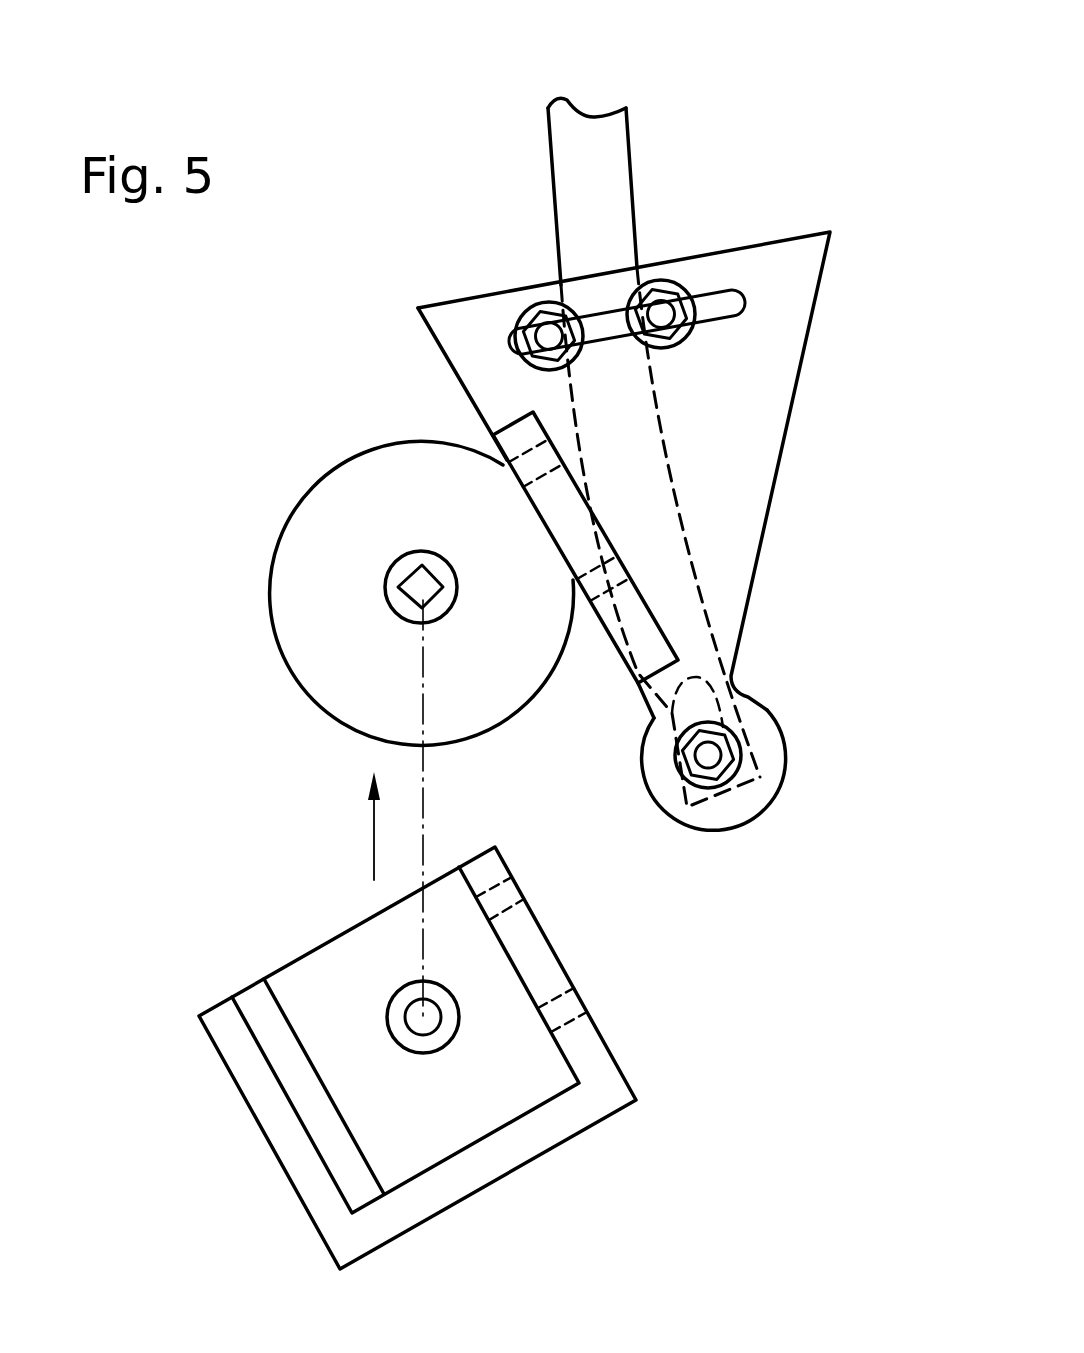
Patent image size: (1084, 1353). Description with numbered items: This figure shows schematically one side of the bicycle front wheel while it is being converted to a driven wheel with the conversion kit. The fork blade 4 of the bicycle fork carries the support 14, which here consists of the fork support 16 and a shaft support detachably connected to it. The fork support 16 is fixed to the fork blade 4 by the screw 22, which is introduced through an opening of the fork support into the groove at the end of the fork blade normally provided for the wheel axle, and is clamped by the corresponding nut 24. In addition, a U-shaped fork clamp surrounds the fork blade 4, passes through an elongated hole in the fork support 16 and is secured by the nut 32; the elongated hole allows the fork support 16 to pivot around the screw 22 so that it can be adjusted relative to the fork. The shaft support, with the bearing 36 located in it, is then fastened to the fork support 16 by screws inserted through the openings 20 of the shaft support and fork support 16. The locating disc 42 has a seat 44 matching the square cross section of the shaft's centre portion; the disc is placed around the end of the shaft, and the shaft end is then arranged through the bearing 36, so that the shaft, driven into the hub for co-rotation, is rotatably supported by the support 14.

The fork blade 4 is at (597, 175).
The support 14 is at (322, 997).
The fork support 16 is at (707, 428).
The bore holes 20 is at (598, 578).
The screw 22 is at (748, 816).
The nut 24 is at (707, 757).
The nut 32 is at (543, 320).
The bearing 36 is at (434, 1044).
The locating disc 42 is at (363, 528).
The seat 44 is at (398, 590).